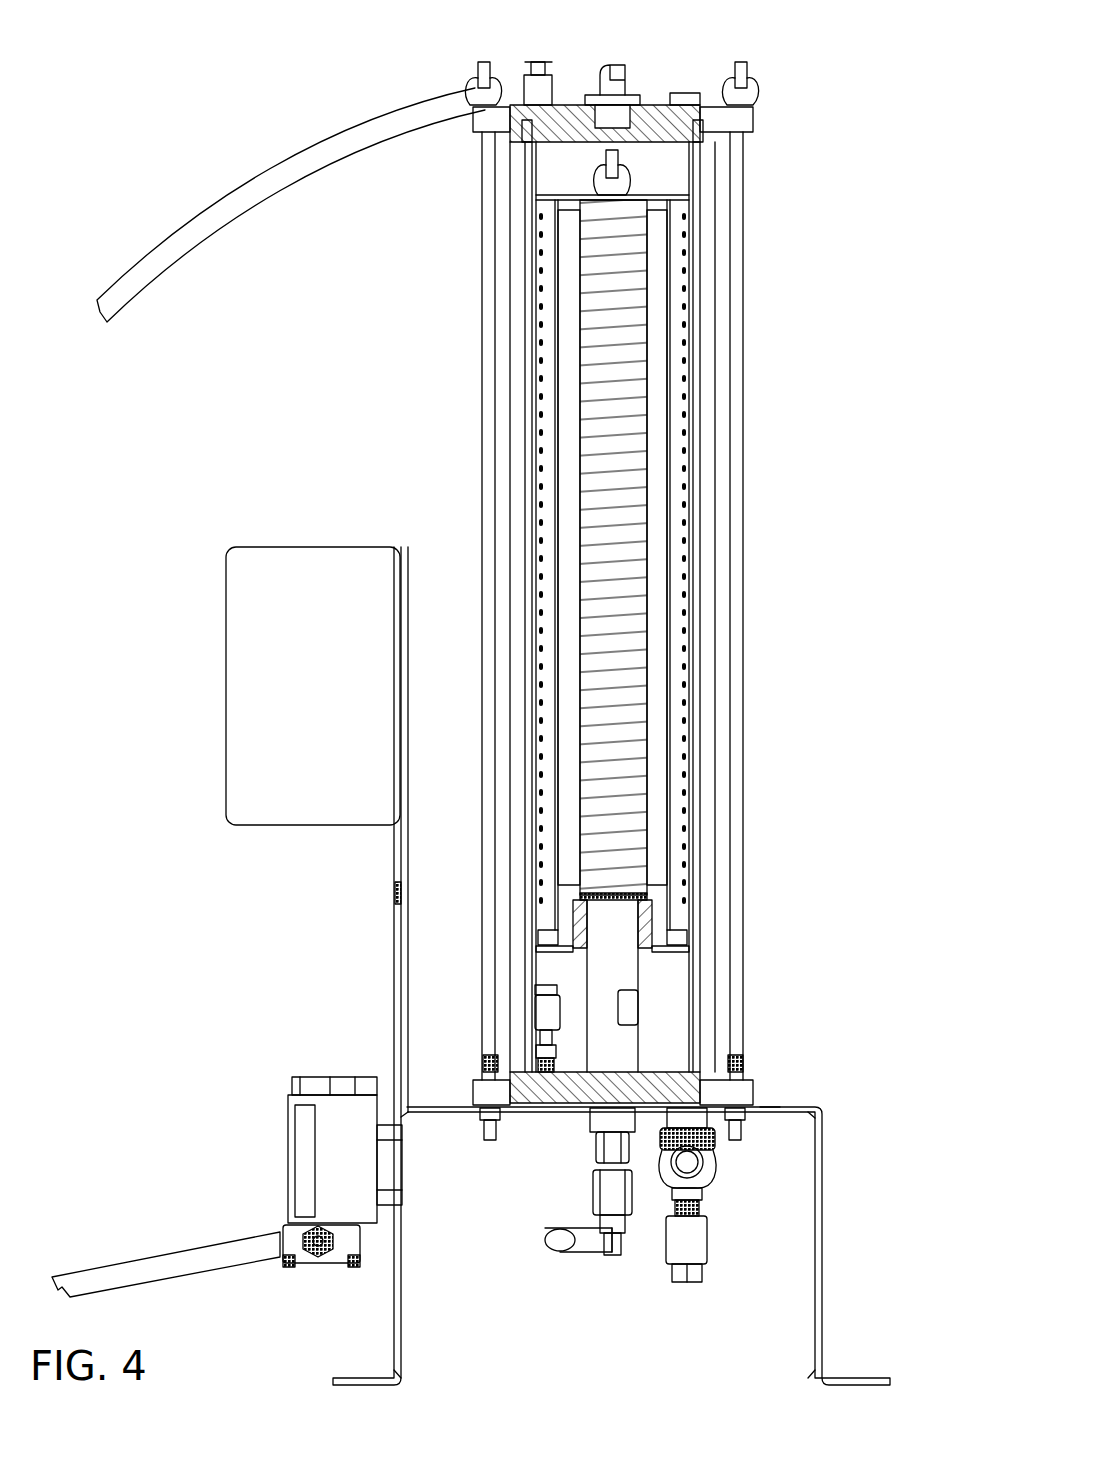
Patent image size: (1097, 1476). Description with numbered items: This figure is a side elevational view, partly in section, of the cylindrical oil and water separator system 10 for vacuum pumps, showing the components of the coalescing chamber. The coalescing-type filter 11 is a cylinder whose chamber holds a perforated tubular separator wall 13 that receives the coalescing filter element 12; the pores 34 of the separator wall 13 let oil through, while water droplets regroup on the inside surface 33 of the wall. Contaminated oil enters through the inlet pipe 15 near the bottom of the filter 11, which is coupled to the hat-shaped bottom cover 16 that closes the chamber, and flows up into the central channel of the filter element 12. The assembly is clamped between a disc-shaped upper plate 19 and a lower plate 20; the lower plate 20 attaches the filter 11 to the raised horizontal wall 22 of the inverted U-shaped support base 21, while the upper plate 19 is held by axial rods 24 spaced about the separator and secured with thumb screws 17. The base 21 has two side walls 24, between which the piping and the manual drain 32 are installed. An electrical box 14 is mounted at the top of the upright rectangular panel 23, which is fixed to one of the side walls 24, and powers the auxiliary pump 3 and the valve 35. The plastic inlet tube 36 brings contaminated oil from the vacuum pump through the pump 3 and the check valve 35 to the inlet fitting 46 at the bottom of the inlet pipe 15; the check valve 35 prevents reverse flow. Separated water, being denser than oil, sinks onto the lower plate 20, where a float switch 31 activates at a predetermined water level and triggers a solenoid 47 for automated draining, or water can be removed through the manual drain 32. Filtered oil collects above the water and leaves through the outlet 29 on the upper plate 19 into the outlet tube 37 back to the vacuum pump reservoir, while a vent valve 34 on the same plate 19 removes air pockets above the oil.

The pump 3 is at (300, 1158).
The oil and water separator system 10 is at (800, 322).
The coalescing-type filter 11 is at (545, 190).
The coalescing filter element 12 is at (568, 730).
The separator wall 13 is at (535, 228).
The electrical box 14 is at (230, 622).
The inlet pipe 15 is at (628, 963).
The bottom cover 16 is at (660, 958).
The thumb screws 17 is at (485, 82).
The upper plate 19 is at (660, 120).
The lower plate 20 is at (640, 1080).
The support base 21 is at (418, 1296).
The raised horizontal wall 22 is at (788, 1107).
The upright support panel 23 is at (404, 918).
The side walls and axial rods 24 is at (490, 510).
The outlet 29 is at (615, 125).
The float switch 31 is at (545, 1015).
The manual drain 32 is at (695, 1250).
The inside surface 33 is at (570, 410).
The vent valve 34 is at (535, 75).
The check valve 35 is at (605, 1200).
The inlet tube 36 is at (162, 1272).
The outlet tube 37 is at (287, 175).
The inlet fitting 46 is at (615, 1242).
The solenoid 47 is at (700, 1170).